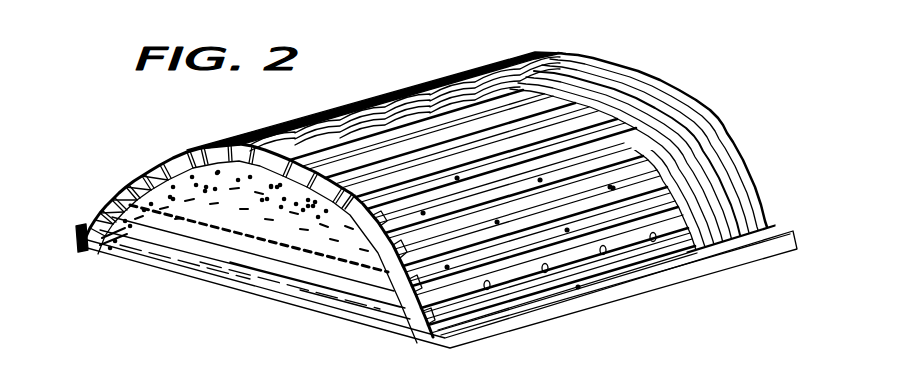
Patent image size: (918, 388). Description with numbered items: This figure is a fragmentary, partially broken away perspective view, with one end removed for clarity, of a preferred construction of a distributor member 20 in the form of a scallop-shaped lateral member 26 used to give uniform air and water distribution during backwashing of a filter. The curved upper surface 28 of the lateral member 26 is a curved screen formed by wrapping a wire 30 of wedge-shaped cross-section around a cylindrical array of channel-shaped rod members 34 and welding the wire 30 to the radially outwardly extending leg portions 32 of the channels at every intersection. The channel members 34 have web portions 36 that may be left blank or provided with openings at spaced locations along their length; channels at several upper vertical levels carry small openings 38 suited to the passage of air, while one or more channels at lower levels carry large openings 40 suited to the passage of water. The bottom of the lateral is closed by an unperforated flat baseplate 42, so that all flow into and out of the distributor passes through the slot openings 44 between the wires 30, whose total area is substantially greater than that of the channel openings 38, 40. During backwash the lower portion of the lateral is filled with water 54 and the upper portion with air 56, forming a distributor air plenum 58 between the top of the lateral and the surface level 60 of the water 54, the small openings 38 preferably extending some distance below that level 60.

The distributor member 20 is at (600, 53).
The scallop-shaped lateral member 26 is at (645, 76).
The curved upper surface 28 is at (707, 152).
The wire 30 is at (97, 210).
The leg portions 32 is at (124, 183).
The channel-shaped rod members 34 is at (125, 234).
The web portions 36 is at (131, 234).
The small openings 38 is at (637, 150).
The large openings 40 is at (688, 224).
The flat baseplate 42 is at (327, 313).
The slot openings 44 is at (477, 93).
The water 54 is at (324, 285).
The air 56 is at (331, 209).
The distributor air plenum 58 is at (360, 246).
The surface level 60 is at (268, 232).